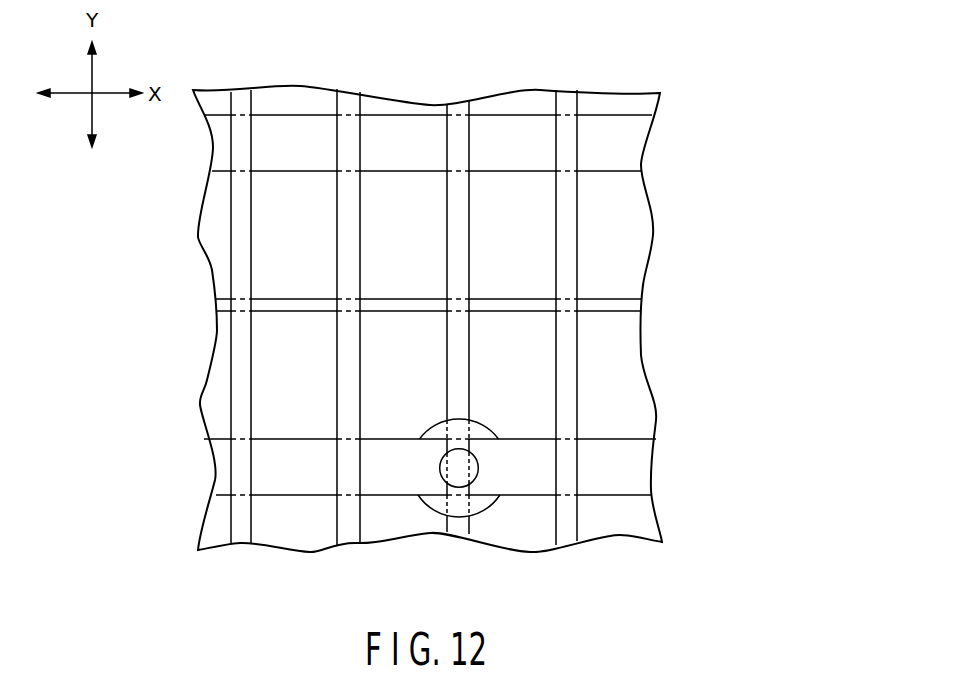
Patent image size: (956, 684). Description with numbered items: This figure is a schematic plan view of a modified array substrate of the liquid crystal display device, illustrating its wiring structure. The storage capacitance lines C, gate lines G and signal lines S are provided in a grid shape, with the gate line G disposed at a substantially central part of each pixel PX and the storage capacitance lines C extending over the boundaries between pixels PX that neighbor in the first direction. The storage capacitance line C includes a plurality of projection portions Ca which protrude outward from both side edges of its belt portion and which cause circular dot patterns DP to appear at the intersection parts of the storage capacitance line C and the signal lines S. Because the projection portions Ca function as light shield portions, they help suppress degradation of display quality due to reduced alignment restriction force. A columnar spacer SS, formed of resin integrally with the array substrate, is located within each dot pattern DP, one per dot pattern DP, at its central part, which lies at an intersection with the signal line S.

The storage capacitance line C is at (222, 147).
The gate line G is at (220, 302).
The signal line S is at (245, 537).
The pixel PX is at (430, 212).
The dot pattern DP is at (425, 413).
The projection portion Ca is at (487, 425).
The columnar spacer SS is at (439, 469).